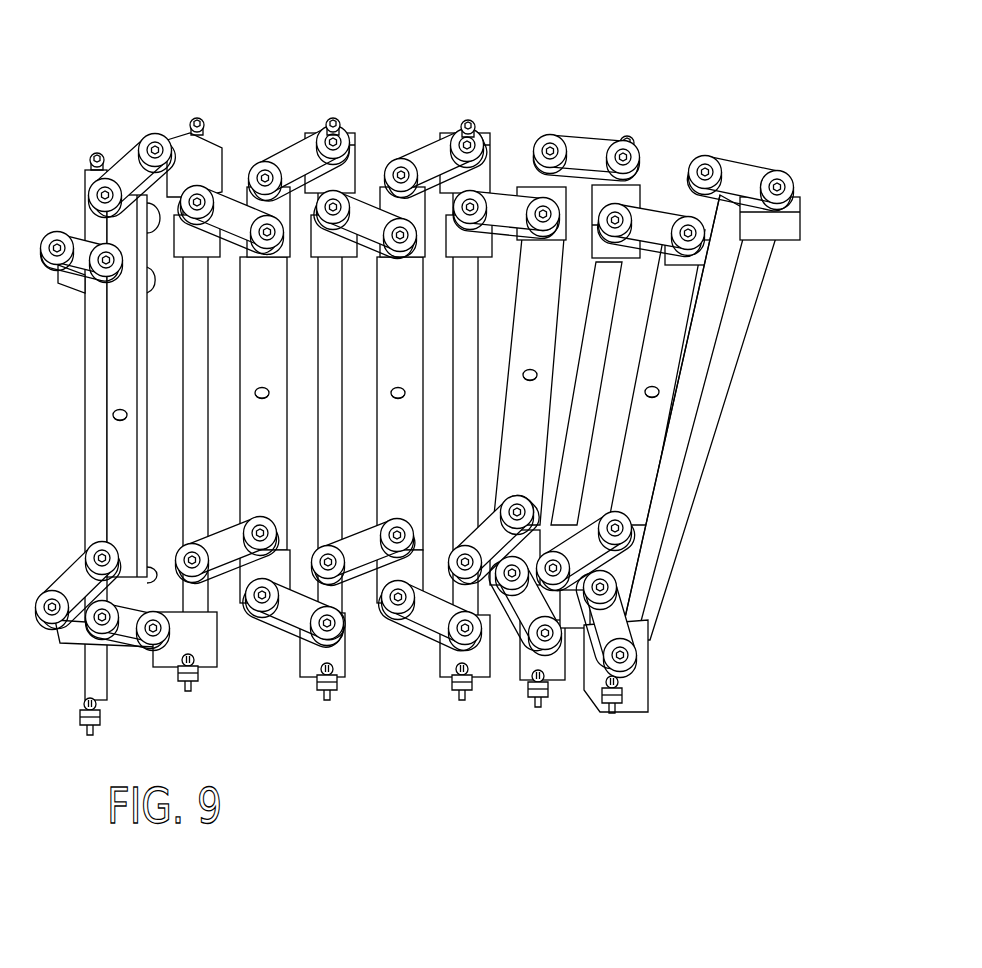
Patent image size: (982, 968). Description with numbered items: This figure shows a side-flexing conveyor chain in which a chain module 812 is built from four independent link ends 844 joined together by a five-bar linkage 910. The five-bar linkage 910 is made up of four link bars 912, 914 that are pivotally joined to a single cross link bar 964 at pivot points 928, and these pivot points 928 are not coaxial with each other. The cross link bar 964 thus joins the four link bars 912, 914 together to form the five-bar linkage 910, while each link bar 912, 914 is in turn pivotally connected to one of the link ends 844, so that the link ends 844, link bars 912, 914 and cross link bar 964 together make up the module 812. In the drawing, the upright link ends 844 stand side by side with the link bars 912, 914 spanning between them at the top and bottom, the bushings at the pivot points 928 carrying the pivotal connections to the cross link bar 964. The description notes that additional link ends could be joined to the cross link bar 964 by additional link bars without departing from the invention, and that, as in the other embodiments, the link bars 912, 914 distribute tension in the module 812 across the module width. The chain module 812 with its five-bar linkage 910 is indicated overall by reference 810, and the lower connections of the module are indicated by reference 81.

The bolts 81 is at (594, 730).
The linkage assembly 810 is at (800, 358).
The chain module 812 is at (597, 128).
The link end 844 is at (800, 216).
The five-bar linkage 910 is at (677, 413).
The link bar 912 is at (753, 170).
The link bar 914 is at (657, 215).
The pivot point 928 is at (708, 168).
The cross link bar 964 is at (675, 362).